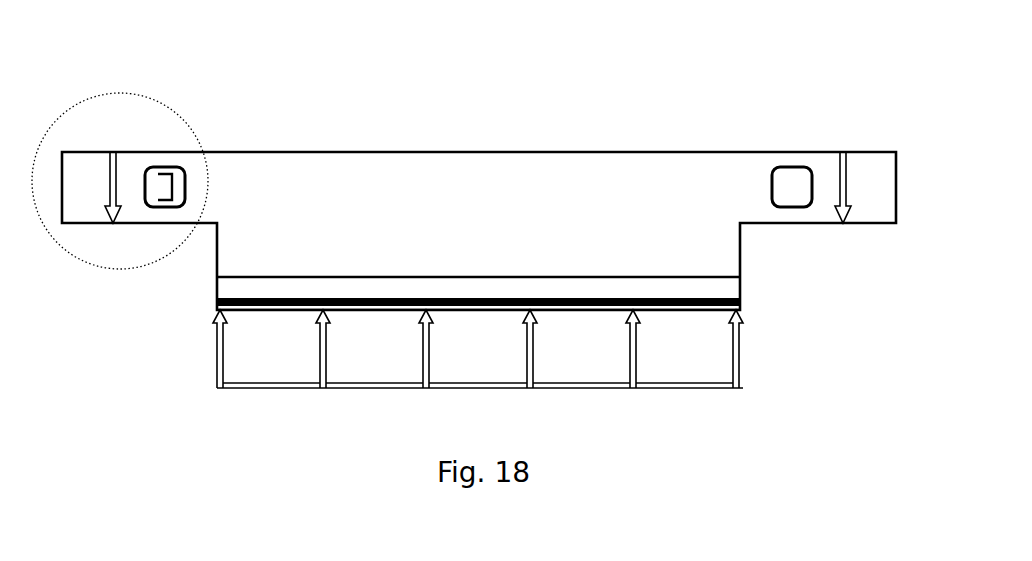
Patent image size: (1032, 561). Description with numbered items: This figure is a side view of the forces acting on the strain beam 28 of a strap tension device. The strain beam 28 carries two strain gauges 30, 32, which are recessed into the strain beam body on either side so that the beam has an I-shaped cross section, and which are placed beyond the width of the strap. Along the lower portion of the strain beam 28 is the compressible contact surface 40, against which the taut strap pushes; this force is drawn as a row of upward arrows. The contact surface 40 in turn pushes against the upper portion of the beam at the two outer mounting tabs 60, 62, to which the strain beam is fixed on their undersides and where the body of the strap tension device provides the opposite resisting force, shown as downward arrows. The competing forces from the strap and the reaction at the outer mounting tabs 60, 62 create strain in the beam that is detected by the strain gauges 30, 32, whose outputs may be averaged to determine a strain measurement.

The strain beam 28 is at (374, 150).
The strain gauge 30 is at (166, 167).
The strain gauge 32 is at (791, 167).
The compressible contact surface 40 is at (740, 282).
The outer mounting tab 60 is at (82, 150).
The outer mounting tab 62 is at (863, 152).